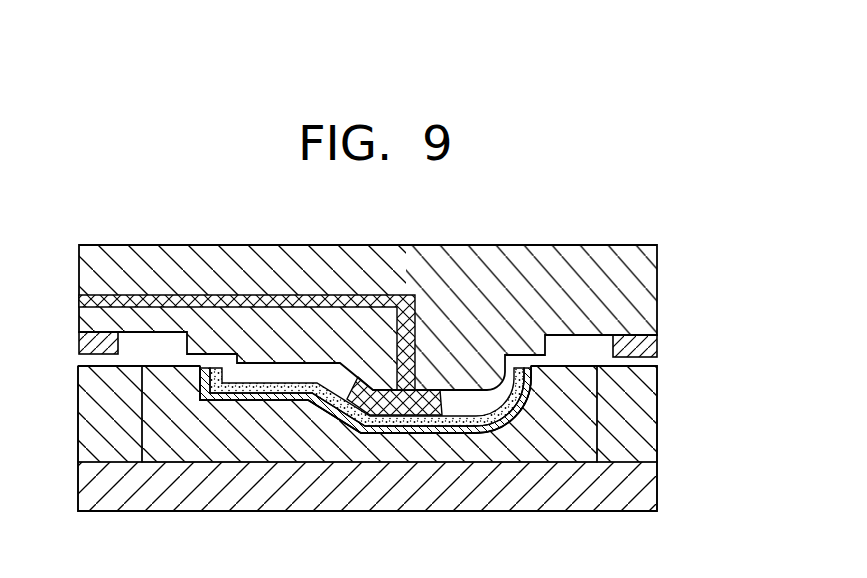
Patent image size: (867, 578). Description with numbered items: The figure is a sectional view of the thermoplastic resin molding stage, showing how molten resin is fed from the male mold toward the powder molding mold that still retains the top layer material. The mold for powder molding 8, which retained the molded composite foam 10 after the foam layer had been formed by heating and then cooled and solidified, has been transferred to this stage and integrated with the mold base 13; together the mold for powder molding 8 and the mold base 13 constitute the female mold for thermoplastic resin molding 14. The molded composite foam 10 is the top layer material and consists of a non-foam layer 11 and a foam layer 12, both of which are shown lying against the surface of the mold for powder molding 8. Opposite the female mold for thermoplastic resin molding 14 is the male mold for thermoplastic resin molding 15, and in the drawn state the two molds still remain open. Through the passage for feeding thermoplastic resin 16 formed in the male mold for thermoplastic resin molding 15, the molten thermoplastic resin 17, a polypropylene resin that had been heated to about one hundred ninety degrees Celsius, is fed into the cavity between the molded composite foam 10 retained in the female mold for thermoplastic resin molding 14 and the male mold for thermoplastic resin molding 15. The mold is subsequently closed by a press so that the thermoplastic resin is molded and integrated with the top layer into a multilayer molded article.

The mold for powder molding 8 is at (580, 402).
The molded composite foam 10 is at (365, 468).
The non-foam layer 11 is at (228, 399).
The foam layer 12 is at (277, 392).
The mold base 13 is at (645, 435).
The female mold for thermoplastic resin molding 14 is at (416, 438).
The male mold for thermoplastic resin molding 15 is at (303, 250).
The passage for feeding thermoplastic resin 16 is at (181, 298).
The molten thermoplastic resin 17 is at (368, 433).